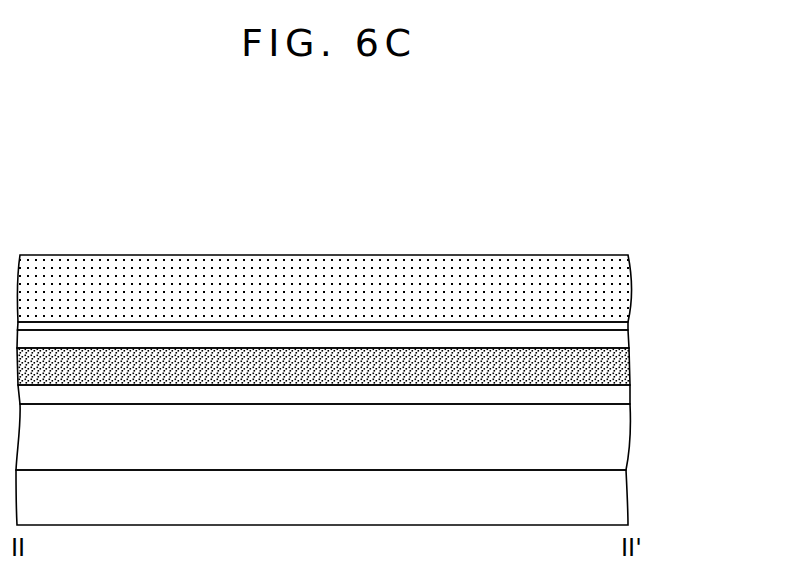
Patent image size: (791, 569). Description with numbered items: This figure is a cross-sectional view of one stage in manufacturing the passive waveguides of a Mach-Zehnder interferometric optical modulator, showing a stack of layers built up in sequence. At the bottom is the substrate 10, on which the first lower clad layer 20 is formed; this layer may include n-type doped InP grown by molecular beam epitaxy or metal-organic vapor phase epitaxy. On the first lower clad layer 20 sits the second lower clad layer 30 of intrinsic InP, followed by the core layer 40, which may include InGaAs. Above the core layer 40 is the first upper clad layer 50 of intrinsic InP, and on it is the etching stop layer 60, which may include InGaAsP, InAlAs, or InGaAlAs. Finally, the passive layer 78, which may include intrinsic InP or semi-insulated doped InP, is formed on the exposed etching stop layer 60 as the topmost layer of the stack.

The substrate 10 is at (617, 498).
The first lower clad layer 20 is at (622, 438).
The second lower clad layer 30 is at (620, 395).
The core layer 40 is at (620, 368).
The first upper clad layer 50 is at (620, 340).
The etching stop layer 60 is at (622, 325).
The passive layer 78 is at (625, 290).